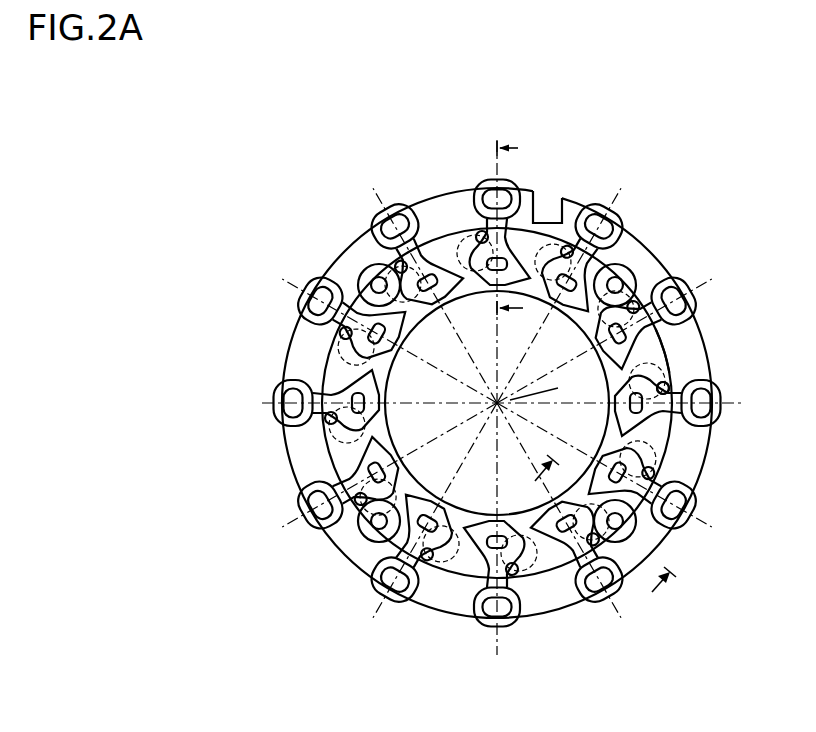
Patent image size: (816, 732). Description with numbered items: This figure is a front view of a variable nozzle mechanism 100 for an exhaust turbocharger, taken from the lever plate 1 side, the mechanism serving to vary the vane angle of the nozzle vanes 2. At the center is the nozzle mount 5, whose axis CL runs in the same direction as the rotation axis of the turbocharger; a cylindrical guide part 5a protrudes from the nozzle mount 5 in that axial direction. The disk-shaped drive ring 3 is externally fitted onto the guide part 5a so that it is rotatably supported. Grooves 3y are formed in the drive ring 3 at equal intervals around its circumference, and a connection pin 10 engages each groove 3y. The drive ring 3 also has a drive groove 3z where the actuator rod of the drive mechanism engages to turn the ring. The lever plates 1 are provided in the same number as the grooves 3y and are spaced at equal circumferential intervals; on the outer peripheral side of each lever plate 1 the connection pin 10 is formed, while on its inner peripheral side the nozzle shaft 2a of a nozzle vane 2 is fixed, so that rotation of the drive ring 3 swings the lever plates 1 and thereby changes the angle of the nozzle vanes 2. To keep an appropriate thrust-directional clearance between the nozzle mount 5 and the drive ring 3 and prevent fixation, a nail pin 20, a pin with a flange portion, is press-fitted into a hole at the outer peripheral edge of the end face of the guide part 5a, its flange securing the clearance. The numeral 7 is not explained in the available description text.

The variable nozzle mechanism 100 is at (624, 134).
The lever plate 1 is at (398, 207).
The nozzle vane 2 is at (346, 357).
The nozzle shaft 2a is at (573, 277).
The drive ring 3 is at (358, 256).
The groove 3y is at (494, 184).
The drive groove 3z is at (548, 200).
The nozzle mount 5 is at (336, 371).
The guide part 5a is at (664, 345).
The pin 7 is at (666, 376).
The connection pin 10 is at (709, 423).
The nail pin 20 is at (348, 548).